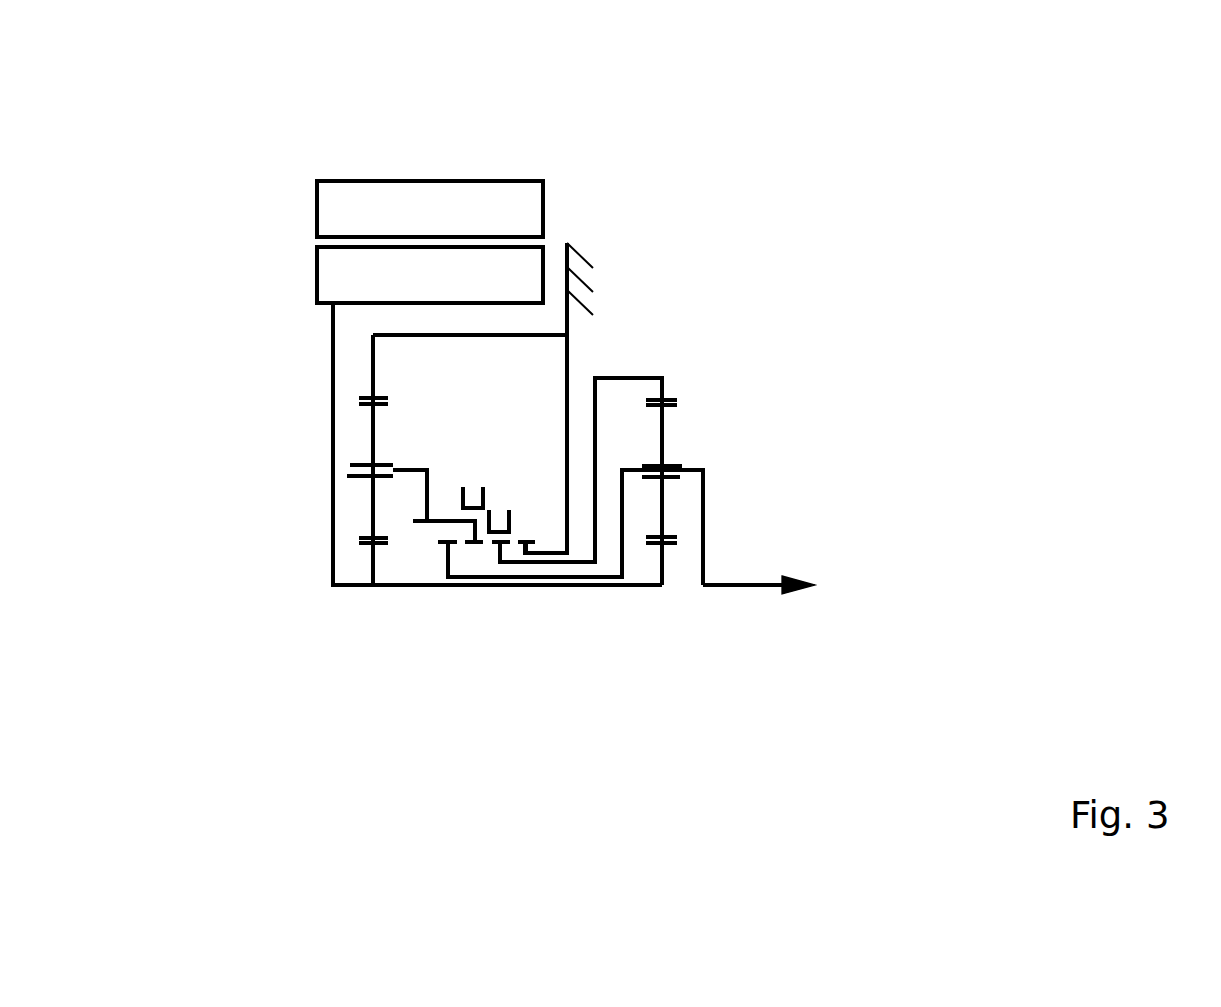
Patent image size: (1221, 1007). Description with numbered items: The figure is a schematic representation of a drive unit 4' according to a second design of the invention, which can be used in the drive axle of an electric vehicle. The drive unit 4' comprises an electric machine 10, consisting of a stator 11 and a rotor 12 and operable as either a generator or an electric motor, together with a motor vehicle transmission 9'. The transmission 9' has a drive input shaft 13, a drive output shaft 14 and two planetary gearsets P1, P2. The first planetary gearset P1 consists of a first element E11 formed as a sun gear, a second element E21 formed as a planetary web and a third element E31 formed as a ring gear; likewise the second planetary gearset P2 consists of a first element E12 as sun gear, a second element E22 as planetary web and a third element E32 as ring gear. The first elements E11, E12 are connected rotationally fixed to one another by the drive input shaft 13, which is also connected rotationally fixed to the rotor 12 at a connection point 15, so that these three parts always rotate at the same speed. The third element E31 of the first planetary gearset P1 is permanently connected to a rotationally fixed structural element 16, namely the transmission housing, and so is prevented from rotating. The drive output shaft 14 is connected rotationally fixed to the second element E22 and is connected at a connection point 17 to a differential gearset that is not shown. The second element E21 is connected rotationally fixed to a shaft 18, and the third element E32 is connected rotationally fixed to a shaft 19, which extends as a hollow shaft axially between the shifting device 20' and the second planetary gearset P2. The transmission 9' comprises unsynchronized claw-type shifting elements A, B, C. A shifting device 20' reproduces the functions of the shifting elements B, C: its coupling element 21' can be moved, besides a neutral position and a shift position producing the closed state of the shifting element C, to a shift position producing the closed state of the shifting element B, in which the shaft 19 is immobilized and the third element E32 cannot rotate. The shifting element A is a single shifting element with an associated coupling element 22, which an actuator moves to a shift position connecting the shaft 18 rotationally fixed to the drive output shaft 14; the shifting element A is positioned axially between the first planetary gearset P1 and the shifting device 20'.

The drive unit 4' is at (521, 398).
The electric machine 10 is at (385, 160).
The stator 11 is at (335, 207).
The rotor 12 is at (335, 272).
The rotationally fixed structural element 16 is at (586, 268).
The motor vehicle transmission 9' is at (521, 398).
The connection point 15 is at (327, 600).
The drive input shaft 13 is at (423, 588).
The first planetary gearset P1 is at (375, 598).
The second planetary gearset P2 is at (662, 598).
The third element of the first planetary gearset E31 is at (373, 372).
The second element of the first planetary gearset E21 is at (350, 466).
The first element of the first planetary gearset E11 is at (373, 563).
The third element of the second planetary gearset E32 is at (663, 387).
The second element of the second planetary gearset E22 is at (692, 467).
The first element of the second planetary gearset E12 is at (663, 557).
The shaft 18 is at (415, 468).
The shaft 19 is at (630, 377).
The coupling element 22 is at (463, 498).
The coupling element 21' is at (712, 519).
The shifting element A is at (459, 555).
The shifting element B is at (521, 555).
The shifting element C is at (484, 556).
The shifting device 20' is at (577, 572).
The drive output shaft 14 is at (750, 587).
The connection point 17 is at (800, 592).